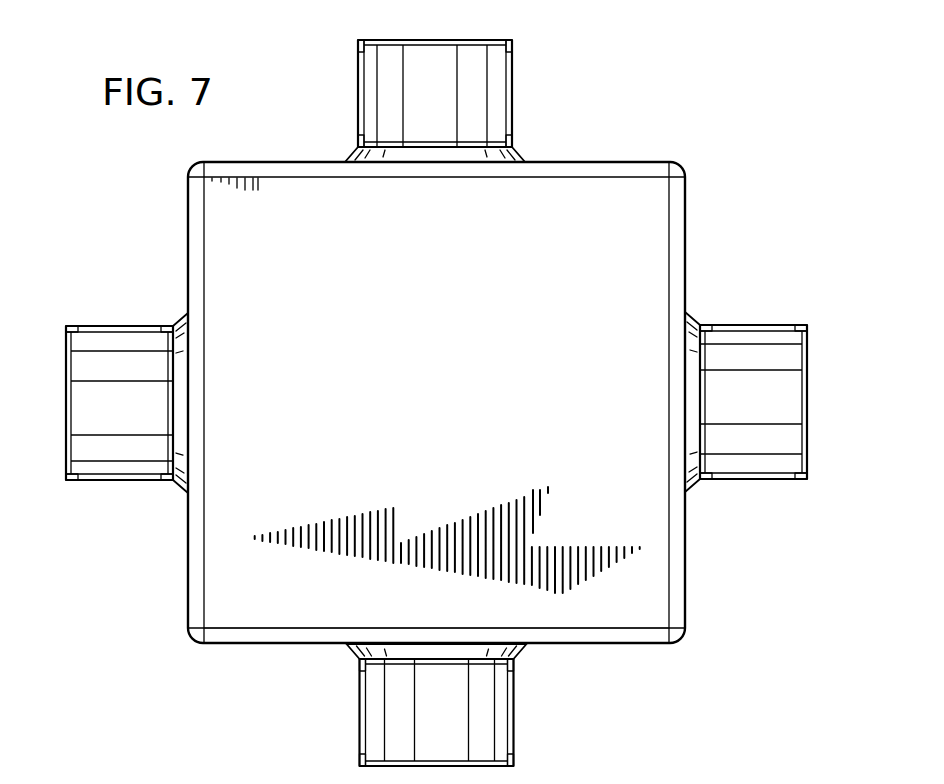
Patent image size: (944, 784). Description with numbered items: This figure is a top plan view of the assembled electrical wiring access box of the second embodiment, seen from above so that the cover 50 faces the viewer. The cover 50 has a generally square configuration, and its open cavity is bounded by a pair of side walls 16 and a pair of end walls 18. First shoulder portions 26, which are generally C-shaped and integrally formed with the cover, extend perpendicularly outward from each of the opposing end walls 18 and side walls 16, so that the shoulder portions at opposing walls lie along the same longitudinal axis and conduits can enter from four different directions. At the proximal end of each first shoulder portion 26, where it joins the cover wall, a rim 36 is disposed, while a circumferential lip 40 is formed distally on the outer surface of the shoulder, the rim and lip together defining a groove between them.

The side walls 16 is at (685, 556).
The end walls 18 is at (613, 643).
The first shoulder portions 26 is at (510, 98).
The rim 36 is at (352, 157).
The circumferential lip 40 is at (360, 50).
The cover 50 is at (714, 130).